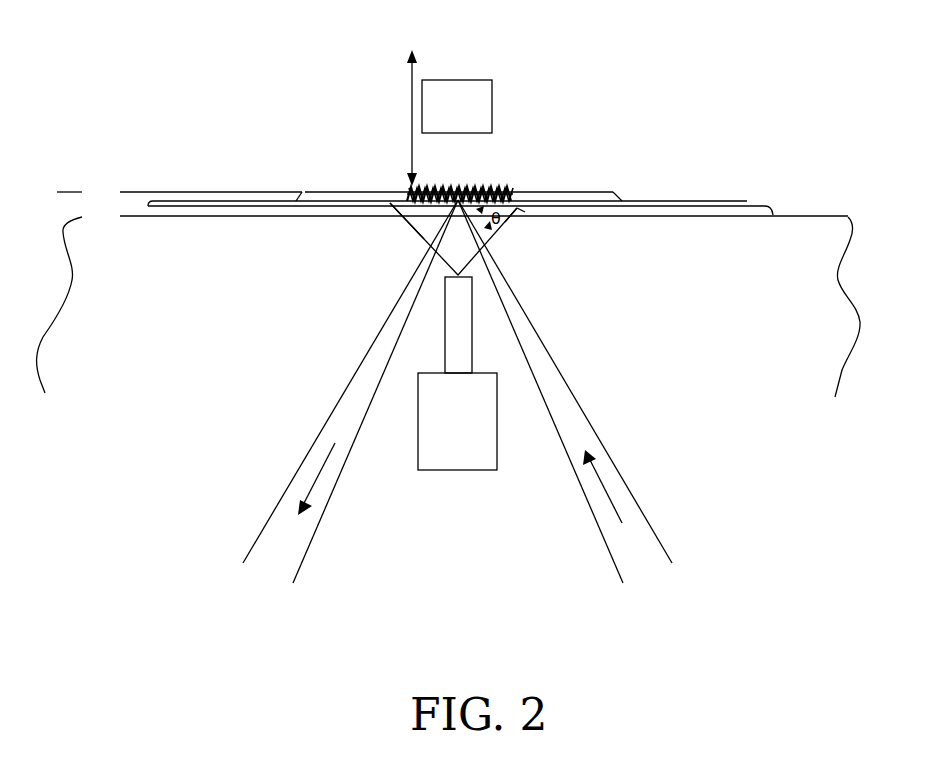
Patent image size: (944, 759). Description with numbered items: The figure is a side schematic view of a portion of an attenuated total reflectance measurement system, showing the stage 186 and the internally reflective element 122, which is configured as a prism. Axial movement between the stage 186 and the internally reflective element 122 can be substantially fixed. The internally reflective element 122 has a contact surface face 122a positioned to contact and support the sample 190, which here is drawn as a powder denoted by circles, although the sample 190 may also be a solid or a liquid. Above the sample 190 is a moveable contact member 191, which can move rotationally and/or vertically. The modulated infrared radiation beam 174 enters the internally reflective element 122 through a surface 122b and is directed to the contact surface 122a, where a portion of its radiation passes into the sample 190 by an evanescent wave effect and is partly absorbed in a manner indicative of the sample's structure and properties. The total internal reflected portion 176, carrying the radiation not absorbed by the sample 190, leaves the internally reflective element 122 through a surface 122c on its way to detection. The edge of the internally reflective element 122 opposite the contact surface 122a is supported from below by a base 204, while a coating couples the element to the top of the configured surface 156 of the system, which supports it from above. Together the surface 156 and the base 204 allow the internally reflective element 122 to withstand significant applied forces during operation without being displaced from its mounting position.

The internally reflective element 122 is at (432, 245).
The contact surface face 122a is at (520, 213).
The surface 122b is at (513, 217).
The surface 122c is at (422, 237).
The enclosure 156 is at (160, 381).
The modulated infrared radiation beam 174 is at (588, 508).
The total internal reflected portion 176 is at (327, 505).
The stage 186 is at (518, 188).
The sample material 190 is at (490, 179).
The moveable contact member 191 is at (478, 119).
The base 204 is at (482, 470).